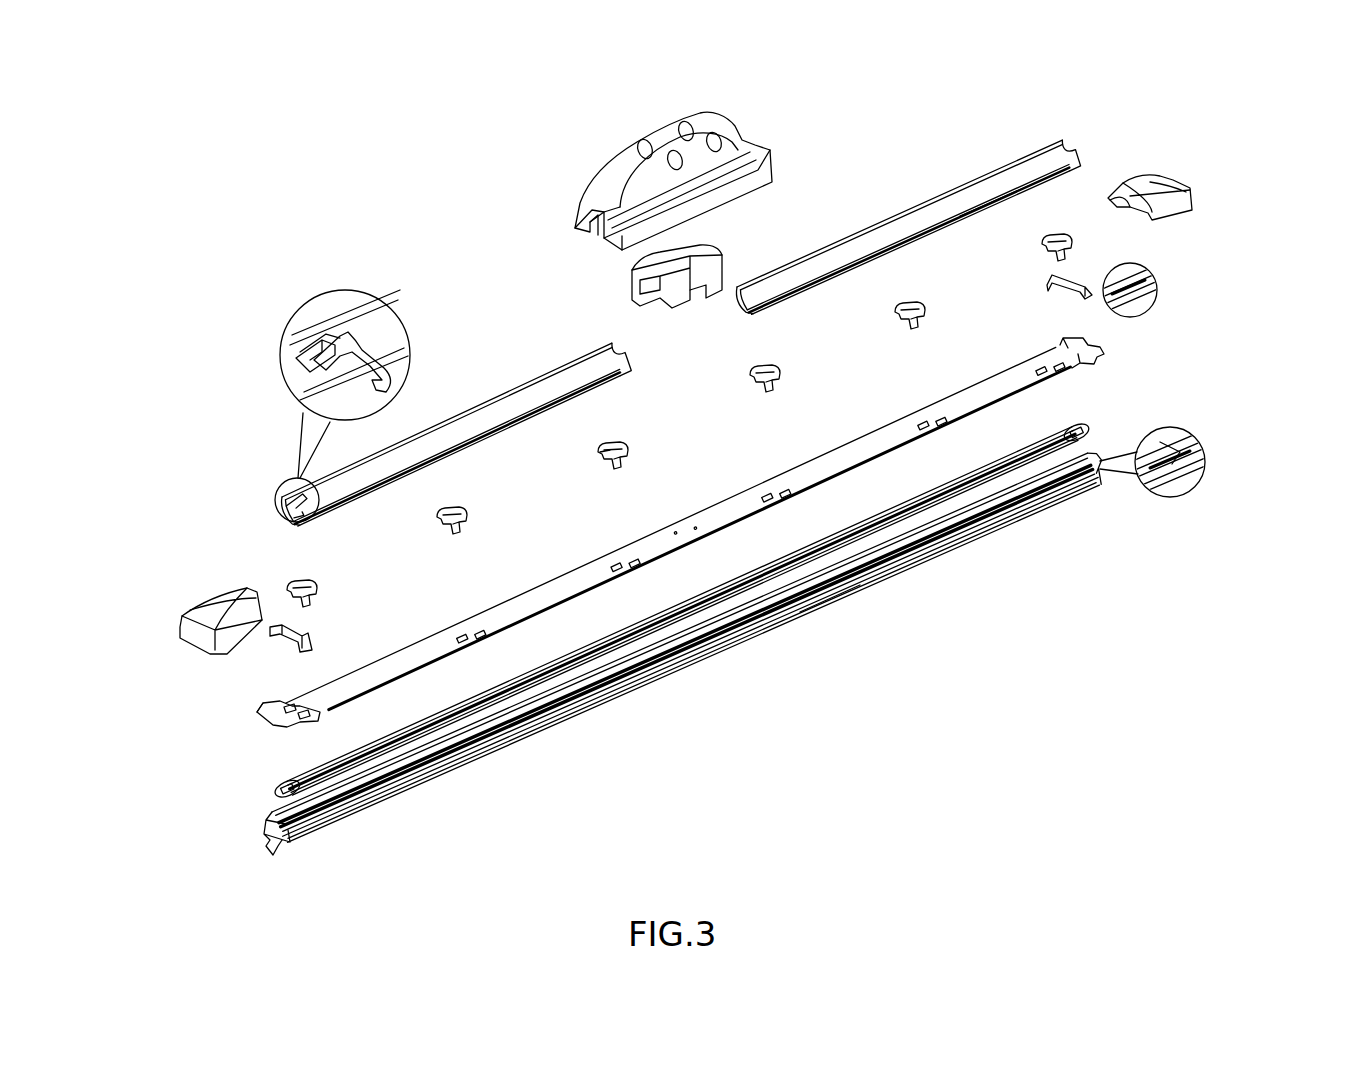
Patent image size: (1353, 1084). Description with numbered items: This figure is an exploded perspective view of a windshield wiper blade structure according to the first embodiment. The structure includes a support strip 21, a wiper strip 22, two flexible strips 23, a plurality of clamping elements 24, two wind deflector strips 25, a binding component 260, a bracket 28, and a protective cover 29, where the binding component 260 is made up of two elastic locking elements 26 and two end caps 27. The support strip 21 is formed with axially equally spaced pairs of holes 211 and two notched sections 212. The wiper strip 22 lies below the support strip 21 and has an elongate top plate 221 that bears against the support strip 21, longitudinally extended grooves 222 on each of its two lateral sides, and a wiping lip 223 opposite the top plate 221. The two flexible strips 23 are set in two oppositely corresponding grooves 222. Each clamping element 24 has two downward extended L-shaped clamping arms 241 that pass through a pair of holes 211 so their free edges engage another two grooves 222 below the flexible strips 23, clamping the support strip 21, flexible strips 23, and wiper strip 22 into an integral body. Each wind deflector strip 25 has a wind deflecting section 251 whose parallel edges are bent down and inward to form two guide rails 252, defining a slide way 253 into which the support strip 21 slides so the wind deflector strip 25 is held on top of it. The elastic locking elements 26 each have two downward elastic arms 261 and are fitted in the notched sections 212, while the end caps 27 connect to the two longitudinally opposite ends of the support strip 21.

The support strip 21 is at (1087, 345).
The pairs of holes 211 is at (282, 717).
The notched sections 212 is at (277, 703).
The wiper strip 22 is at (1037, 537).
The top plate 221 is at (265, 832).
The longitudinally extended grooves 222 is at (1204, 447).
The wiping lip 223 is at (827, 597).
The flexible strips 23 is at (273, 793).
The clamping elements 24 is at (625, 445).
The L-shaped clamping arms 241 is at (616, 455).
The wind deflector strips 25 is at (925, 183).
The wind deflecting section 251 is at (1022, 168).
The guide rails 252 is at (292, 353).
The slide way 253 is at (337, 368).
The elastic locking elements 26 is at (320, 637).
The binding component 260 is at (285, 673).
The elastic arms 261 is at (1158, 282).
The end caps 27 is at (1190, 170).
The bracket 28 is at (712, 257).
The protective cover 29 is at (710, 165).